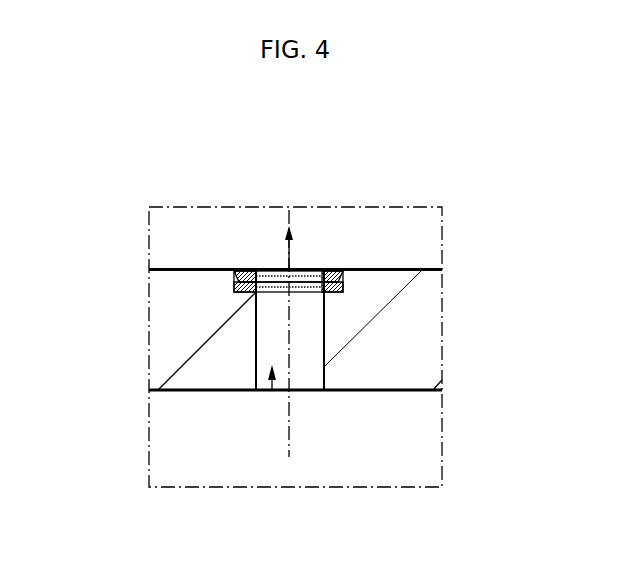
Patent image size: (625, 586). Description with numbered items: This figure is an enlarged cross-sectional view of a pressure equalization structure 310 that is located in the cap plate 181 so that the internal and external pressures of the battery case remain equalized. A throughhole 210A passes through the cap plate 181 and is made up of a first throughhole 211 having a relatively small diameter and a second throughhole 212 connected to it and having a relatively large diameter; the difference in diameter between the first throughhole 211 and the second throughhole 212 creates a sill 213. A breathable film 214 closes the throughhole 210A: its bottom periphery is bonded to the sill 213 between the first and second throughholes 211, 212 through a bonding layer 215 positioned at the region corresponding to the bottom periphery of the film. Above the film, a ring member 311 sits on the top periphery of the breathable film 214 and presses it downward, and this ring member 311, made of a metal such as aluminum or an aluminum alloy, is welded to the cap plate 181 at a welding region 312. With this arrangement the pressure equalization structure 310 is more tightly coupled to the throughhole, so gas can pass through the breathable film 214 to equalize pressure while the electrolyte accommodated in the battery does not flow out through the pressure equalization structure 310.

The pressure equalization structure 310 is at (402, 253).
The ring member 311 is at (242, 270).
The welding region 312 is at (332, 270).
The breathable film 214 is at (273, 275).
The second throughhole 212 is at (308, 272).
The sill 213 is at (236, 278).
The bonding layer 215 is at (344, 288).
The first throughhole 211 is at (324, 337).
The cap plate 181 is at (187, 340).
The throughhole 210A is at (272, 392).